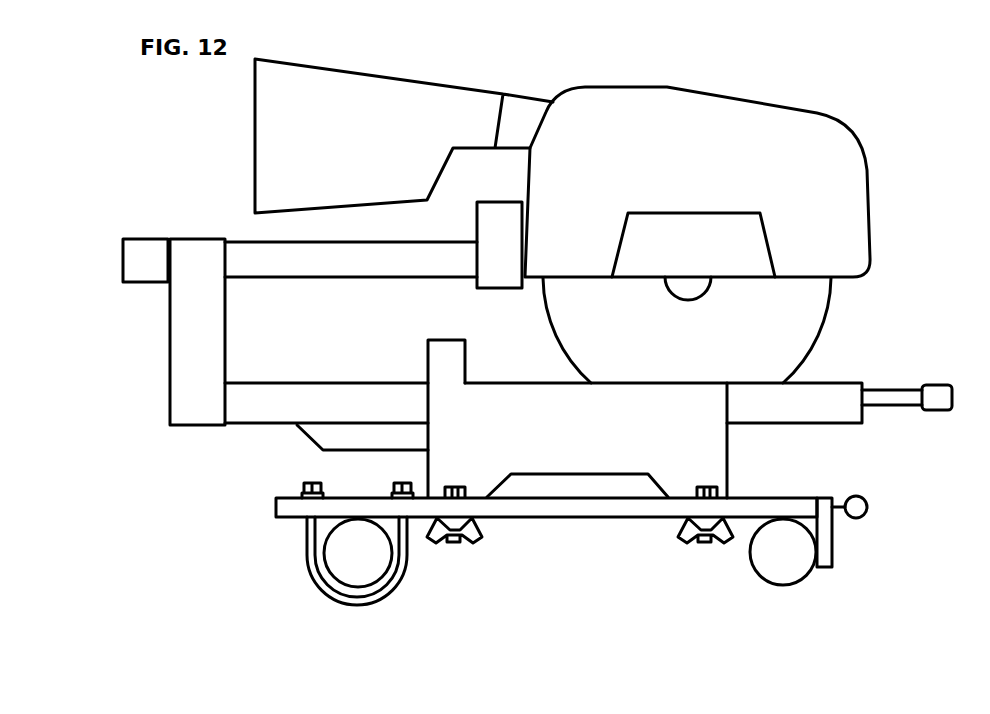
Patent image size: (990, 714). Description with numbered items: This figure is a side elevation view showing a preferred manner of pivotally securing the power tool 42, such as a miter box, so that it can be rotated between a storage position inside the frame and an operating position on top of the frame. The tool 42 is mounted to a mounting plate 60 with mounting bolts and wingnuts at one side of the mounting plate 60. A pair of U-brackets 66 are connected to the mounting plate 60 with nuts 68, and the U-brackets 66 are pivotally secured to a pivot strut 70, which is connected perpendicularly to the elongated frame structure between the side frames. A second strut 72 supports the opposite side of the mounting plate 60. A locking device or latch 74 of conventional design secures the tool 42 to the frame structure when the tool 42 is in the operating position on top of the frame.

The tool 42 is at (798, 320).
The mounting plate 60 is at (753, 508).
The U-brackets 66 is at (318, 537).
The nuts 68 is at (395, 488).
The pivot strut 70 is at (367, 563).
The second strut 72 is at (793, 562).
The latch 74 is at (889, 505).